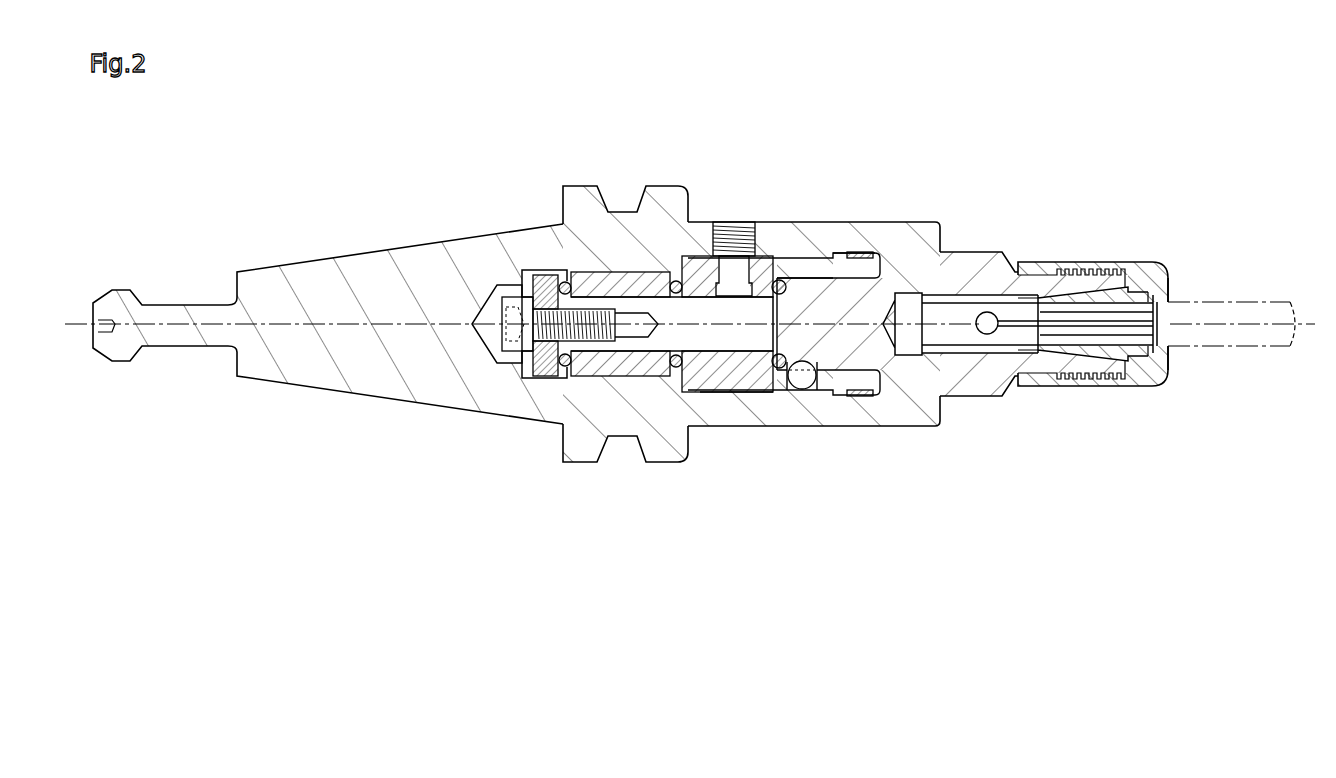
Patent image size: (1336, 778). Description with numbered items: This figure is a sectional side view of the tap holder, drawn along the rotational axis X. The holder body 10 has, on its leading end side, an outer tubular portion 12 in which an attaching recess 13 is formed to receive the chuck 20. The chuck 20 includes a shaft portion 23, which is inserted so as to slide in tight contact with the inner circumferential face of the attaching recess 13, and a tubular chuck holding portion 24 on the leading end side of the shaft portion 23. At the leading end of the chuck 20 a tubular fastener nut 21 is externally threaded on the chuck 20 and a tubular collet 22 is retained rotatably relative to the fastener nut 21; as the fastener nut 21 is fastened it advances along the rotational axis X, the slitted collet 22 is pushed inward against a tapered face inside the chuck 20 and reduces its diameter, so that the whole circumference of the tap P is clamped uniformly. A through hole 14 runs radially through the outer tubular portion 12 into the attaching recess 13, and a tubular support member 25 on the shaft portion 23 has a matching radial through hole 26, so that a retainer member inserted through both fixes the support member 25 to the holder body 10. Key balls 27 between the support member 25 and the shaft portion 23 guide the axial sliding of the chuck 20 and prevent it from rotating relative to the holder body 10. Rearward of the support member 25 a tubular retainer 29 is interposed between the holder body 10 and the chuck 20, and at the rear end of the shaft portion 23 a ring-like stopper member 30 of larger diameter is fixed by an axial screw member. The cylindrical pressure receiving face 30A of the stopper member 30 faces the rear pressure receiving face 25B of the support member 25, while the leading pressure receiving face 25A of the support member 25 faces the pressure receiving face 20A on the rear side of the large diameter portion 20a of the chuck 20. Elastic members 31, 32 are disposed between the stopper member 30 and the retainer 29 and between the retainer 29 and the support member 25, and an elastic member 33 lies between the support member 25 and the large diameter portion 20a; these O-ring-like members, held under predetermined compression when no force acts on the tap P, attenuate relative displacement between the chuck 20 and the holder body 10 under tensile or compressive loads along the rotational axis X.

The holder body 10 is at (375, 253).
The outer tubular portion 12 is at (920, 226).
The attaching recess 13 is at (517, 380).
The through hole 14 is at (742, 224).
The chuck 20 is at (985, 255).
The pressure receiving face 20A is at (777, 272).
The large diameter portion 20a is at (817, 262).
The fastener nut 21 is at (1162, 278).
The collet 22 is at (1165, 357).
The shaft portion 23 is at (745, 323).
The chuck holding portion 24 is at (1040, 275).
The support member 25 is at (828, 263).
The pressure receiving face 25A is at (737, 362).
The pressure receiving face 25B is at (648, 265).
The through hole 26 is at (723, 268).
The key balls 27 is at (753, 387).
The retainer 29 is at (643, 376).
The stopper member 30 is at (510, 277).
The pressure receiving face 30A is at (561, 267).
The elastic member 31 is at (567, 378).
The elastic member 32 is at (673, 362).
The elastic member 33 is at (792, 362).
The rotational axis X is at (175, 322).
The tap P is at (1290, 303).